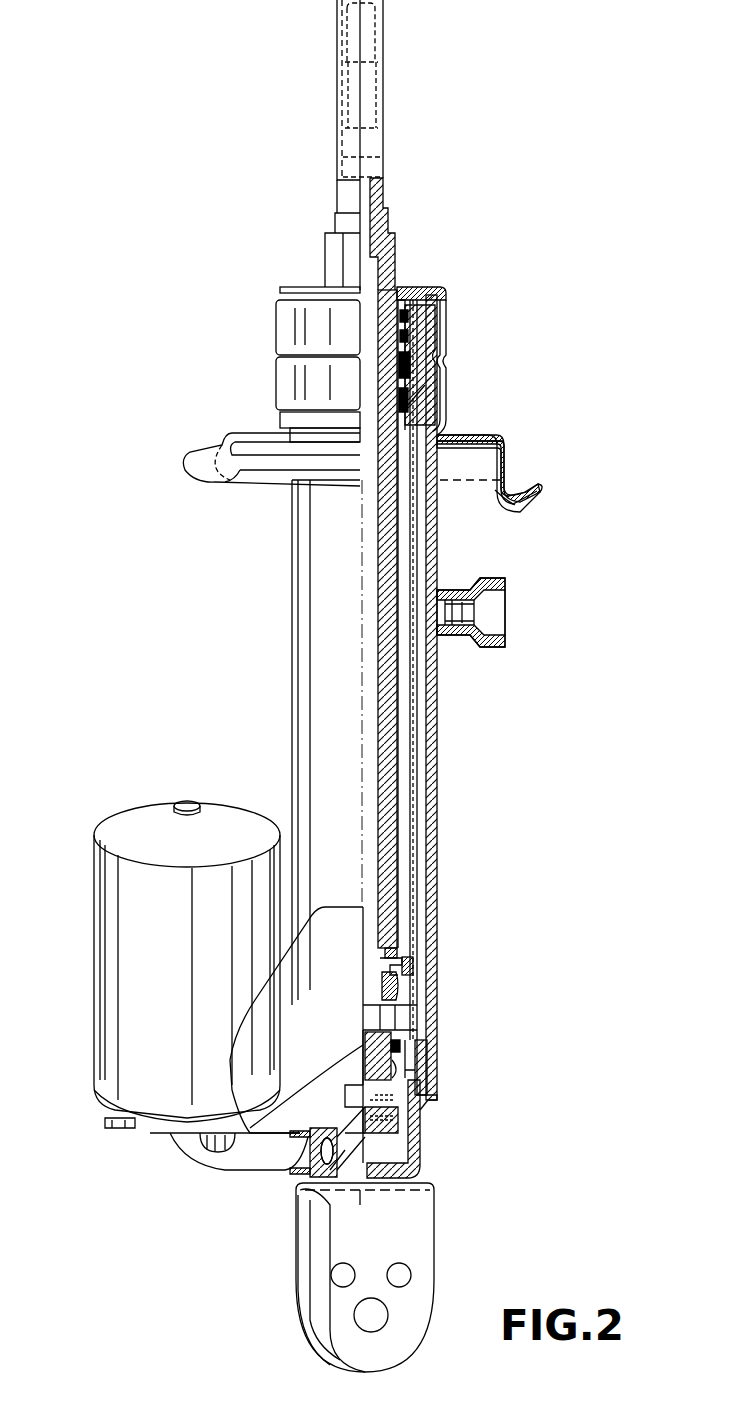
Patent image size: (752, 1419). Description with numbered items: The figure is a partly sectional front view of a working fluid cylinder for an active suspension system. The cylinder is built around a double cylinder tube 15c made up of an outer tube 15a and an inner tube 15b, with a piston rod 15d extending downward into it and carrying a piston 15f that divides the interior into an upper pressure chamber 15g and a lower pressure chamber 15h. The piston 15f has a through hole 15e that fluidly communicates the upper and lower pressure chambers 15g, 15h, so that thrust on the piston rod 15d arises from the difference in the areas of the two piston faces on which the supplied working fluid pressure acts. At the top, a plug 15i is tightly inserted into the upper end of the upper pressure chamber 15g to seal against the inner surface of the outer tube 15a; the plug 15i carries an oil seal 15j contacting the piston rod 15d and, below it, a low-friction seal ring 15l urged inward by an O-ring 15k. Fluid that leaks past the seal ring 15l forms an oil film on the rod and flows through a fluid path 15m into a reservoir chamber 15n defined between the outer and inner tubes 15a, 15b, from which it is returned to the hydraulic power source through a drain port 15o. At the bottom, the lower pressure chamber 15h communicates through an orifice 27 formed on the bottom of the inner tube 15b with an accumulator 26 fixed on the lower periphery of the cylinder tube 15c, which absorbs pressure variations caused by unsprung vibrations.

The outer tube 15a is at (437, 798).
The inner tube 15b is at (415, 843).
The double cylinder tube 15c is at (505, 782).
The piston rod 15d is at (392, 723).
The through hole 15e is at (413, 963).
The piston 15f is at (418, 978).
The upper pressure chamber 15g is at (405, 760).
The lower pressure chamber 15h is at (398, 1020).
The plug 15i is at (432, 318).
The oil seal 15j is at (410, 298).
The O-ring 15k is at (403, 372).
The seal ring 15l is at (445, 345).
The fluid path 15m is at (409, 385).
The reservoir chamber 15n is at (420, 549).
The drain port 15o is at (495, 625).
The accumulator 26 is at (93, 940).
The orifice 27 is at (440, 1108).